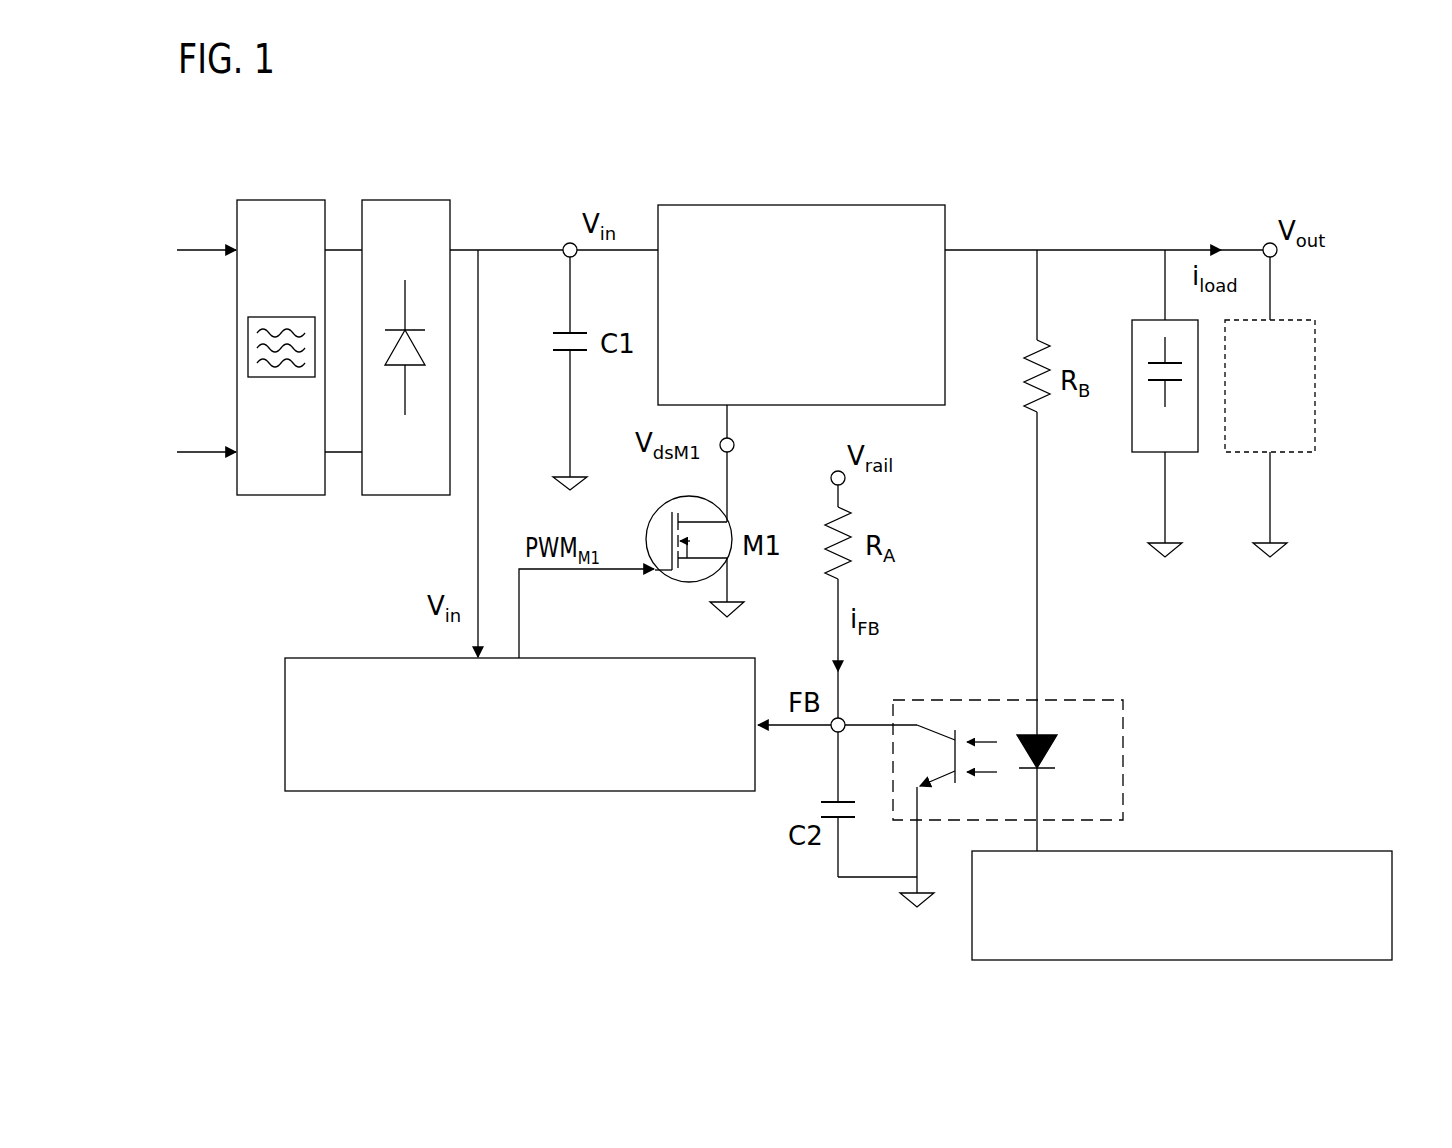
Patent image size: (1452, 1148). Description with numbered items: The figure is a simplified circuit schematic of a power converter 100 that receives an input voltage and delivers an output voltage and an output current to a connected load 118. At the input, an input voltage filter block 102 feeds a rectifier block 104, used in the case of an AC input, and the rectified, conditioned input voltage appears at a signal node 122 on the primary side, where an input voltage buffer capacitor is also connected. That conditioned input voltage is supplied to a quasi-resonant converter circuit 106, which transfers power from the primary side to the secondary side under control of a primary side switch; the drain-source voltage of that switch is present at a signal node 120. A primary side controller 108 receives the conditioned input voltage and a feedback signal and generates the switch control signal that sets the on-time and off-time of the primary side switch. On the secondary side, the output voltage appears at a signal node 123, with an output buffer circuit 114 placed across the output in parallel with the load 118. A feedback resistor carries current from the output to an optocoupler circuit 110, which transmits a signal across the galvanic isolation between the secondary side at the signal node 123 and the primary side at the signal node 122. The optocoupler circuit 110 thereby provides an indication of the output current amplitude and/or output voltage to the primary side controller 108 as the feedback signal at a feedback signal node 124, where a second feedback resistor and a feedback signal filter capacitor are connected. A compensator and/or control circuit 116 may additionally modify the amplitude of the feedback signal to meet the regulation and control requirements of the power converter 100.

The power converter 100 is at (238, 157).
The input voltage filter block 102 is at (317, 488).
The rectifier block 104 is at (442, 488).
The quasi-resonant converter circuit 106 is at (927, 398).
The primary side controller 108 is at (737, 783).
The optocoupler circuit 110 is at (1113, 812).
The output buffer circuit 114 is at (1188, 445).
The compensator and/or control circuit 116 is at (1373, 950).
The load 118 is at (1295, 445).
The signal node 120 is at (733, 450).
The signal node 122 is at (564, 244).
The signal node 123 is at (1265, 244).
The feedback signal node 124 is at (830, 734).